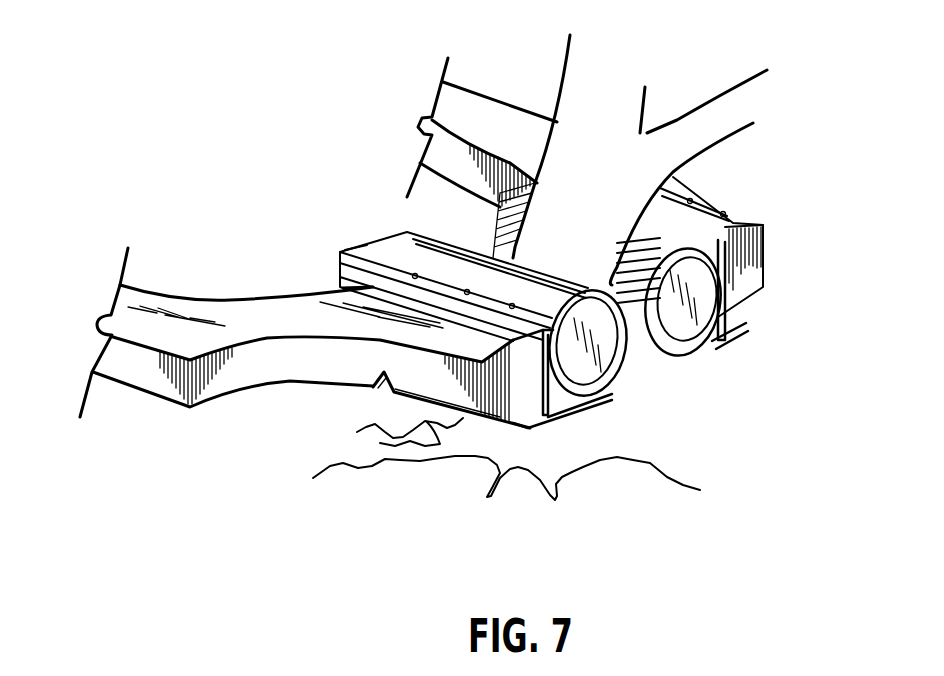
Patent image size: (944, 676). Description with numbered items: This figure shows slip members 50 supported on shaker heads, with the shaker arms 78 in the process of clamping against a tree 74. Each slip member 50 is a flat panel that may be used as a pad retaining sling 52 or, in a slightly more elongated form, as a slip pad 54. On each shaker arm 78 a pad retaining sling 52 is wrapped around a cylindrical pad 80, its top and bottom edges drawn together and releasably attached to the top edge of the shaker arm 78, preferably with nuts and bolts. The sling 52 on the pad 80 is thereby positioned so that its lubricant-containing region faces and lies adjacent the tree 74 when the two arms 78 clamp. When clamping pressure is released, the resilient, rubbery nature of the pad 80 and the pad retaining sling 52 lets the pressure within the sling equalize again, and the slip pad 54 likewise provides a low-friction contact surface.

The slip member 50 is at (418, 248).
The pad retaining sling 52 is at (602, 397).
The slip pad 54 is at (560, 400).
The tree 74 is at (700, 113).
The shaker arm 78 is at (192, 310).
The cylindrical pad 80 is at (693, 313).